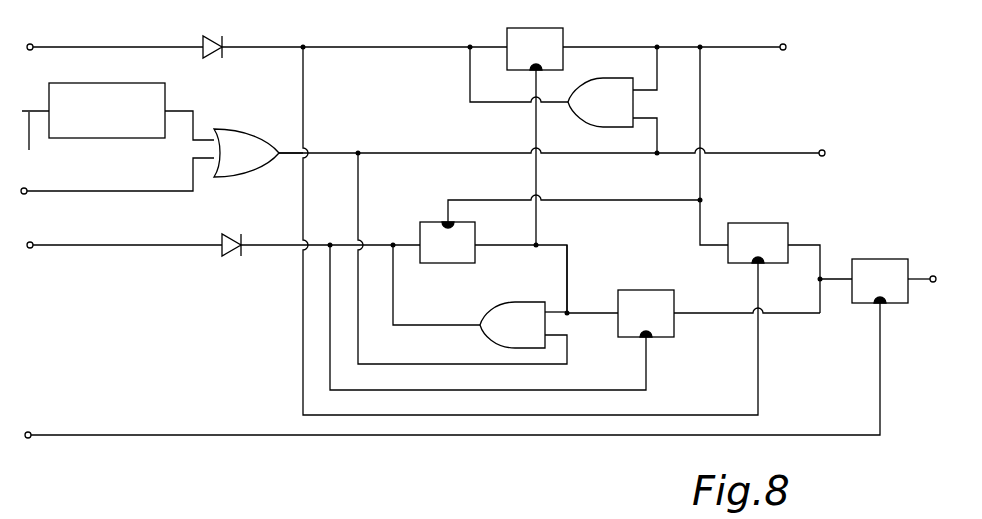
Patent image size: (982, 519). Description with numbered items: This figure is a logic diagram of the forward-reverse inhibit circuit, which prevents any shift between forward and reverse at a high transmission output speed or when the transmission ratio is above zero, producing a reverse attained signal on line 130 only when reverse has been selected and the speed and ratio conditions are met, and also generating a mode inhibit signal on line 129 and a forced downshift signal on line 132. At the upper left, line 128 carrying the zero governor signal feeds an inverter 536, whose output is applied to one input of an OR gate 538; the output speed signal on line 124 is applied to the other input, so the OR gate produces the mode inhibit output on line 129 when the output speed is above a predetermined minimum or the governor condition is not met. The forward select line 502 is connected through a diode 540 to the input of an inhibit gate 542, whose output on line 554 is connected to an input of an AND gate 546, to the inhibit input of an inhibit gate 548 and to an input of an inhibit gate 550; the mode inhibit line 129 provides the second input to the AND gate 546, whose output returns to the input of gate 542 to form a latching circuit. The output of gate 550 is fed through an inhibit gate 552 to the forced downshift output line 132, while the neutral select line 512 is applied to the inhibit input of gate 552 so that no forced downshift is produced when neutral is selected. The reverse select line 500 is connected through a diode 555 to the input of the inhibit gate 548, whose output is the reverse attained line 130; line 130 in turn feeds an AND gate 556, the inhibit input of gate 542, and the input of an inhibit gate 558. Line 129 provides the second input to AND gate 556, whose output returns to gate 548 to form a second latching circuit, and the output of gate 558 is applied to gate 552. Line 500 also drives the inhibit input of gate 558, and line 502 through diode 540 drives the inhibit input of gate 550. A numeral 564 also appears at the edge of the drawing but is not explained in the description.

The reverse select line 500 is at (85, 47).
The forward select line 502 is at (70, 245).
The neutral select line 512 is at (90, 435).
The output speed signal line 124 is at (85, 191).
The zero governor signal line 128 is at (49, 142).
The mode inhibit line 129 is at (750, 153).
The reverse attained line 130 is at (725, 47).
The forced downshift output line 132 is at (920, 282).
The inverter 536 is at (118, 83).
The OR gate 538 is at (232, 129).
The diode 540 is at (226, 234).
The inhibit gate 542 is at (425, 263).
The AND gate 546 is at (486, 333).
The inhibit gate 548 is at (540, 28).
The inhibit gate 550 is at (645, 290).
The inhibit gate 552 is at (858, 259).
The output line of inhibit gate 542 554 is at (570, 275).
The diode 555 is at (213, 37).
The AND gate 556 is at (571, 80).
The inhibit gate 558 is at (740, 223).
The line 564 is at (280, 518).